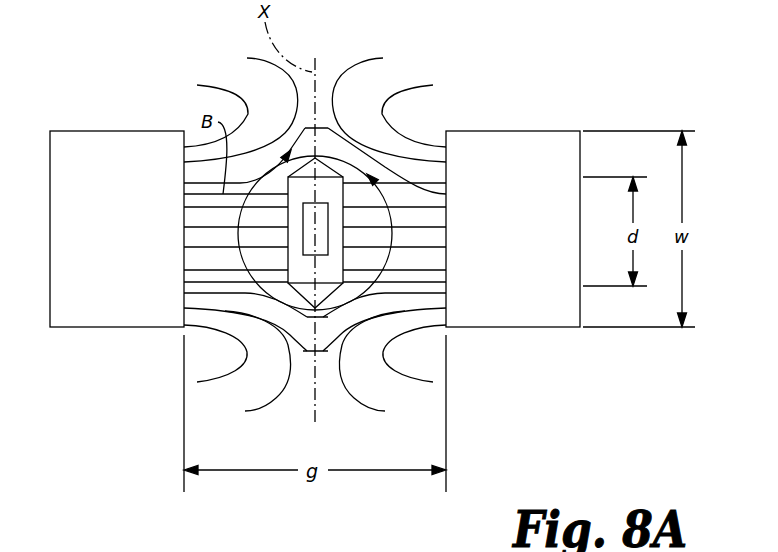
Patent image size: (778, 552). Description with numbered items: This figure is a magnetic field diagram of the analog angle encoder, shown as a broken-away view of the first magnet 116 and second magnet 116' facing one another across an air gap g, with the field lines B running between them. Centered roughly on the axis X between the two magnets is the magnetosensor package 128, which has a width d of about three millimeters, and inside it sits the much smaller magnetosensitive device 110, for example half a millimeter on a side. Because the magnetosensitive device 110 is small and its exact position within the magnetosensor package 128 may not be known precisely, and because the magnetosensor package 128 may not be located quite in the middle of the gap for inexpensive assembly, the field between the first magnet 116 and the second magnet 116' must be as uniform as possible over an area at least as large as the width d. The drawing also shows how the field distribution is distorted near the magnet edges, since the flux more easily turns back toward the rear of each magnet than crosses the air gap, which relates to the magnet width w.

The first magnet 116 is at (117, 192).
The second magnet 116' is at (513, 196).
The magnetosensitive device 110 is at (333, 141).
The magnetosensor package 128 is at (302, 290).